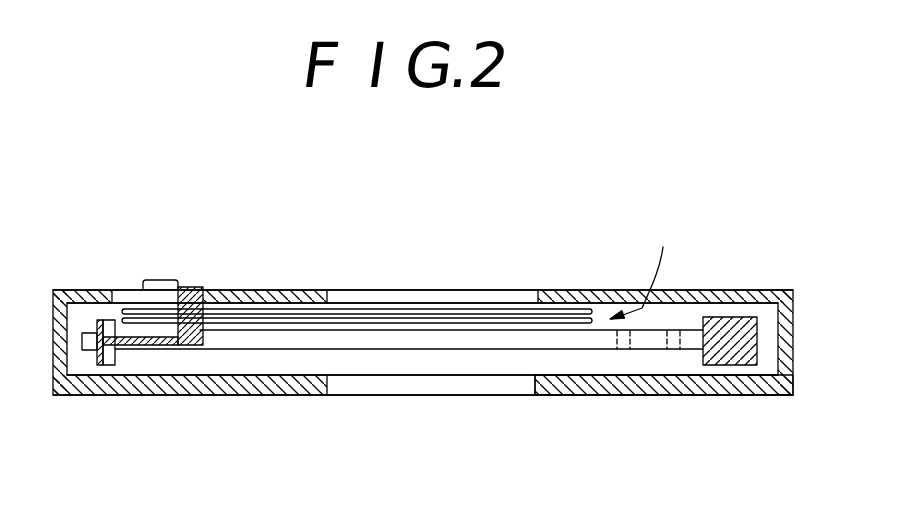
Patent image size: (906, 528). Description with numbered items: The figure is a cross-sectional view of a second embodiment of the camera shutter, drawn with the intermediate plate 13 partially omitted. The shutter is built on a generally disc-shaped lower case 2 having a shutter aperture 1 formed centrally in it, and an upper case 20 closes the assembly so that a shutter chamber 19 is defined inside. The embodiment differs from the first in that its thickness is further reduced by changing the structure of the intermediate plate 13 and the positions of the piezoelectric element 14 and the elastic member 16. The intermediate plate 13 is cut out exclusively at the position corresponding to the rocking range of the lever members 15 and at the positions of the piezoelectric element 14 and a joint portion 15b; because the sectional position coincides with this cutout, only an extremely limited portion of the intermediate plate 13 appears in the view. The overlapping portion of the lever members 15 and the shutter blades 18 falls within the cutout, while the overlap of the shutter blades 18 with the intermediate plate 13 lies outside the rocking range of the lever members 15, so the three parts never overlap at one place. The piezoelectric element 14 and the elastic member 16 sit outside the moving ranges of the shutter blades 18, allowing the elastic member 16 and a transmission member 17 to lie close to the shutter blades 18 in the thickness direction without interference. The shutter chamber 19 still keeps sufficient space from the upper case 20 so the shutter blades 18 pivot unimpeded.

The shutter aperture 1 is at (536, 383).
The lower case 2 is at (706, 383).
The intermediate plate 13 is at (792, 347).
The piezoelectric element 14 is at (757, 320).
The lever members 15 is at (375, 347).
The joint portion 15b is at (673, 350).
The elastic member 16 is at (93, 367).
The transmission member 17 is at (157, 347).
The shutter blades 18 is at (416, 313).
The shutter chamber 19 is at (648, 263).
The upper case 20 is at (765, 292).